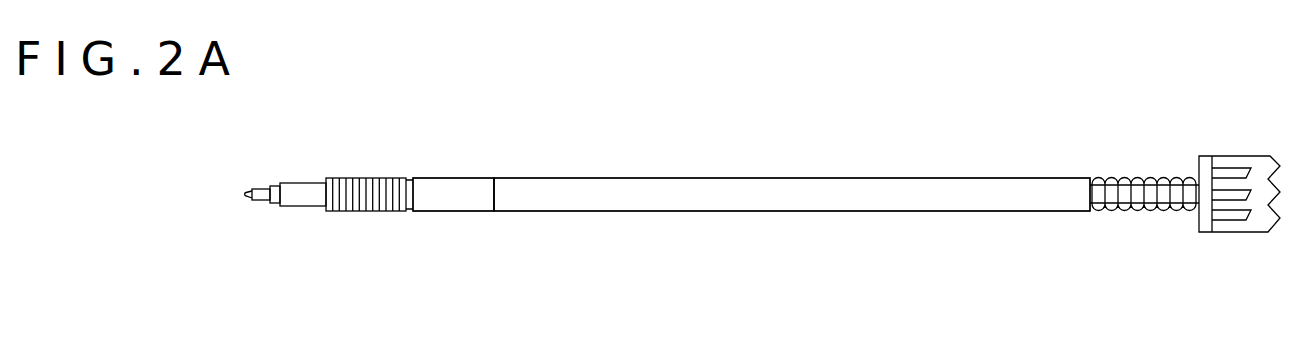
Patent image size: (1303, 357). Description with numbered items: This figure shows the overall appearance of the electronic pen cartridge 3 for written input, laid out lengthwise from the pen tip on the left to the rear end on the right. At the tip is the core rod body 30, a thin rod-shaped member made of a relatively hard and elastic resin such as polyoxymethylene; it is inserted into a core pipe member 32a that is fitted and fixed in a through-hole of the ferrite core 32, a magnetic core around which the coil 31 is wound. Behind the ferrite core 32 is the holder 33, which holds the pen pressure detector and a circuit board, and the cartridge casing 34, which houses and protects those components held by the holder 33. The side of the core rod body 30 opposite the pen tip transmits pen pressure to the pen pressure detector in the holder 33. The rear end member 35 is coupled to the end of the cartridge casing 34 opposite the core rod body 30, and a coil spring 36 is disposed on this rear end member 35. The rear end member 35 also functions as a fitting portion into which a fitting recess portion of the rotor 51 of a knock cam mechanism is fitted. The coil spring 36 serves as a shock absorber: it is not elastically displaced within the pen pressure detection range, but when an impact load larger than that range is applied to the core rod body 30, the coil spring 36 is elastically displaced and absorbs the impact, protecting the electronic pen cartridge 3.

The electronic pen cartridge 3 is at (526, 170).
The core rod body 30 is at (247, 189).
The coil 31 is at (373, 178).
The ferrite core 32 is at (295, 188).
The core pipe member 32a is at (262, 188).
The holder 33 is at (447, 205).
The cartridge casing 34 is at (692, 200).
The rear end member 35 is at (1133, 197).
The coil spring 36 is at (1122, 180).
The rotor 51 is at (1257, 222).